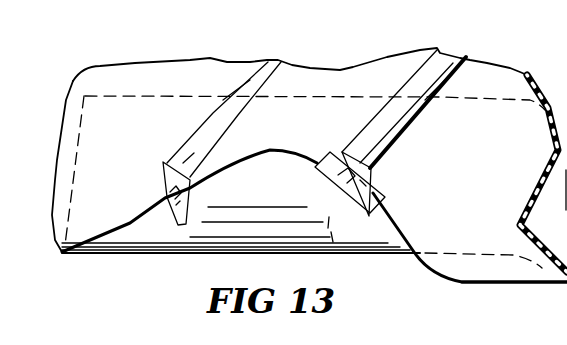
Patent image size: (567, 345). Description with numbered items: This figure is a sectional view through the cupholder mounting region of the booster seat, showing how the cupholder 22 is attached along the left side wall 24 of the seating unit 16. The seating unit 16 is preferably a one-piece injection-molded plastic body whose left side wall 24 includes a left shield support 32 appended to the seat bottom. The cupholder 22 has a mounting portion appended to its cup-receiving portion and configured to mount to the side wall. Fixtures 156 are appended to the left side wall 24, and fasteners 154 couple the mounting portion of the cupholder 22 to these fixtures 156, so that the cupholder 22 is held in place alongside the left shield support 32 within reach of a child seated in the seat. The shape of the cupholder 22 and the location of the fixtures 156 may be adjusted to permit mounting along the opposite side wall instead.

The left side wall 24 is at (72, 80).
The fixtures 156 is at (223, 110).
The fasteners 154 is at (160, 183).
The left shield support 32 is at (108, 200).
The cupholder 22 is at (183, 257).
The seating unit 16 is at (480, 284).